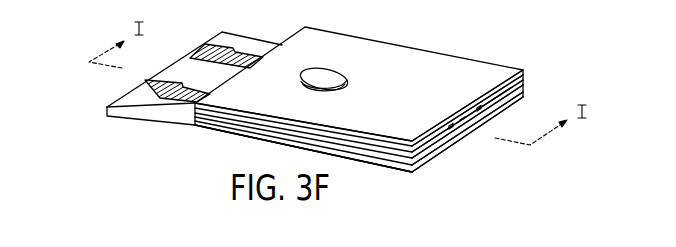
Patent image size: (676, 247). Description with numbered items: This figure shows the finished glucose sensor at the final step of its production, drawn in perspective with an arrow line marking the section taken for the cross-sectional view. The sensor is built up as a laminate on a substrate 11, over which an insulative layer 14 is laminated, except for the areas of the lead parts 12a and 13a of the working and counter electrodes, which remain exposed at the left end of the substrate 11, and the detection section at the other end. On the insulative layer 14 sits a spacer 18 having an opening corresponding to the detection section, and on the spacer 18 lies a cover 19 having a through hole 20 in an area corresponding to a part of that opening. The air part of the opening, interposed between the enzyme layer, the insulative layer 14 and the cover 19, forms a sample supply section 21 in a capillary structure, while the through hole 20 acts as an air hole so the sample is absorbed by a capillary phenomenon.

The substrate 11 is at (432, 153).
The lead part 12a is at (143, 80).
The lead part 13a is at (205, 43).
The insulative layer 14 is at (523, 87).
The spacer 18 is at (523, 73).
The cover 19 is at (440, 73).
The through hole 20 is at (330, 74).
The sample supply section 21 is at (473, 130).